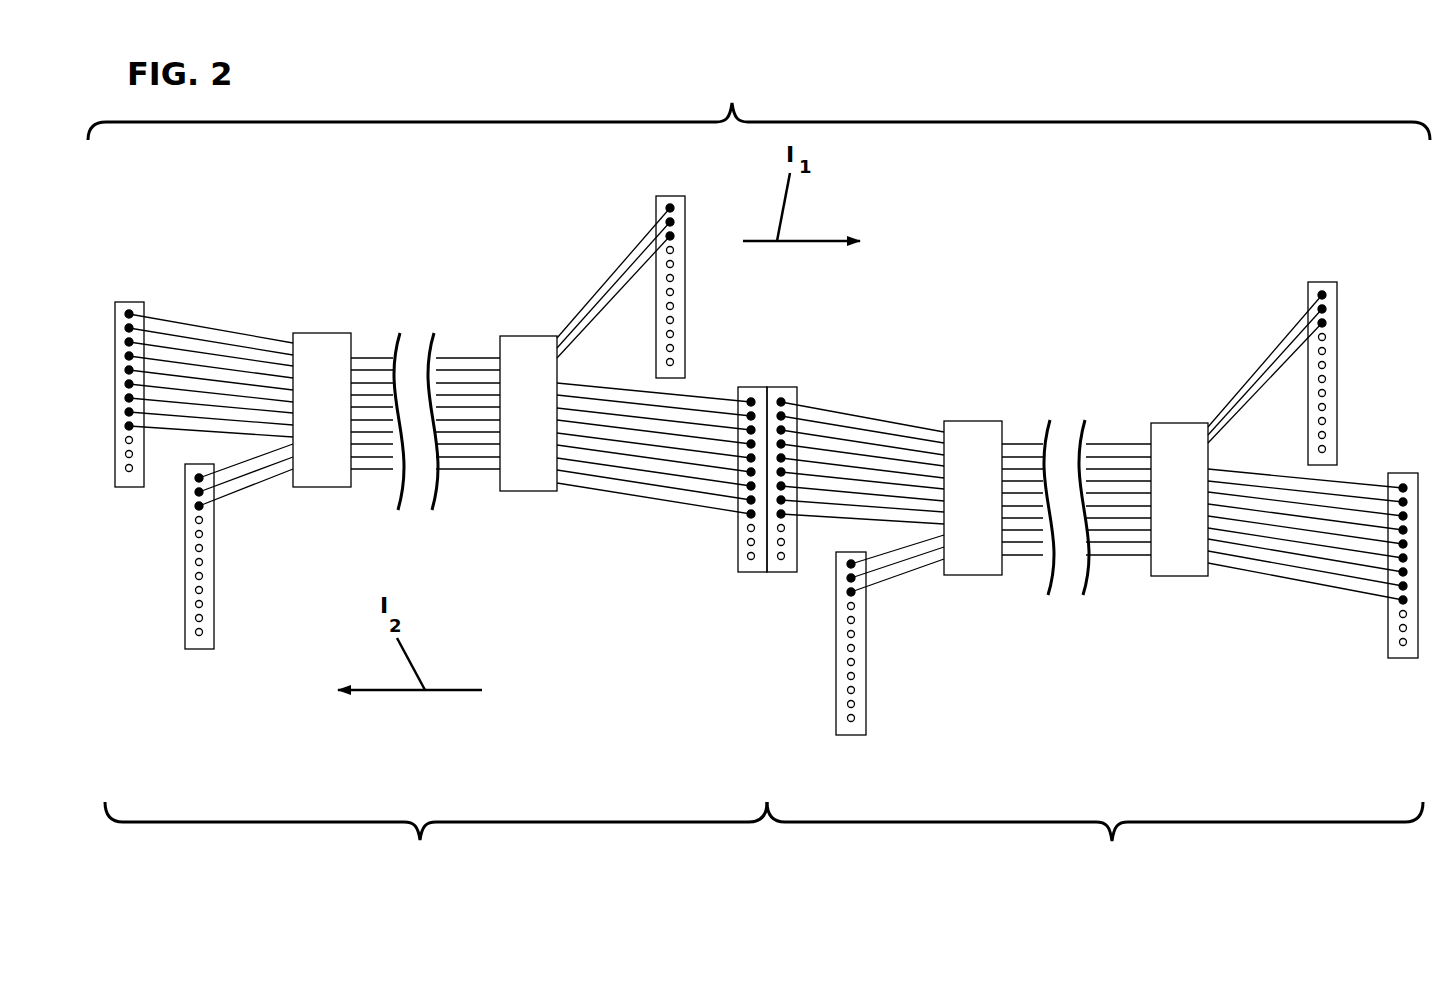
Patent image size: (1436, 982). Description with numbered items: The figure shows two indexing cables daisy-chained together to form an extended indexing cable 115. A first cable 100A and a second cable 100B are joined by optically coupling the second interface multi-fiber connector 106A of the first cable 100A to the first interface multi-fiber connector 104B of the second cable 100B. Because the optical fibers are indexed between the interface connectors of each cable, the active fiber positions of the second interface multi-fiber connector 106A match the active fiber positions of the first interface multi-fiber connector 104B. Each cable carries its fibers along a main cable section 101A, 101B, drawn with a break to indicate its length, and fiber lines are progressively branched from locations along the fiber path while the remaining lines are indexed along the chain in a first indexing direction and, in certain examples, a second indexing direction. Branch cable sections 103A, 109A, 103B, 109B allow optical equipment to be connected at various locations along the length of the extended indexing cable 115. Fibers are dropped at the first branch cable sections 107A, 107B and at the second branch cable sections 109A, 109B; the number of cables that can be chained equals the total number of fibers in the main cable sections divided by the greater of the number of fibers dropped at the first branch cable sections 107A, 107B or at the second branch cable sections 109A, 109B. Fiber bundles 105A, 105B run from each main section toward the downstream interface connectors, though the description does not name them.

The extended indexing cable 115 is at (759, 106).
The first cable 100A is at (436, 837).
The second cable 100B is at (1095, 837).
The main cable section 101A is at (463, 353).
The main cable section 101B is at (1114, 440).
The branch cable section 103A is at (210, 327).
The branch cable section 103B is at (871, 405).
The first output wire bundle 105A is at (632, 495).
The second output wire bundle 105B is at (1302, 590).
The second interface multi-fiber connector 106A is at (752, 574).
The first interface multi-fiber connector 104B is at (782, 577).
The first branch cable section 107A is at (252, 488).
The first branch cable section 107B is at (899, 583).
The second branch cable section 109A is at (603, 283).
The second branch cable section 109B is at (1253, 362).